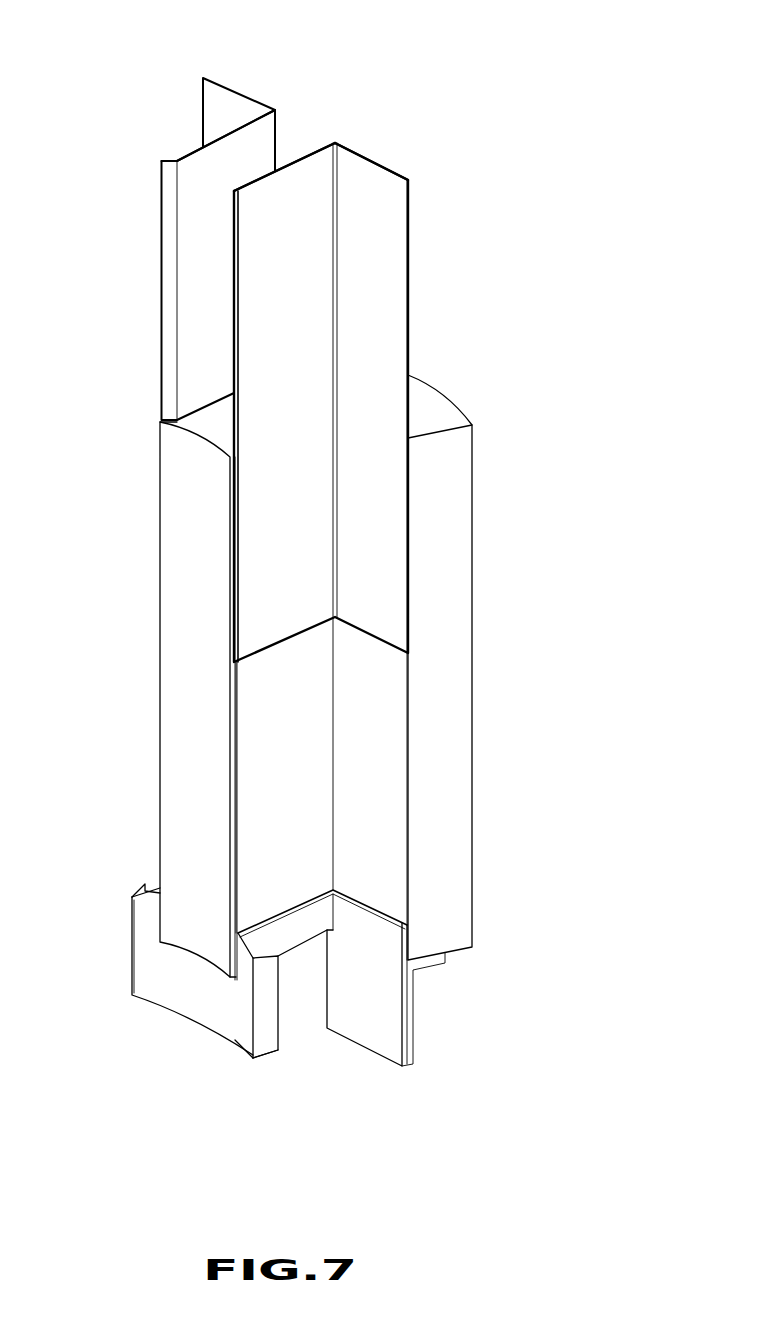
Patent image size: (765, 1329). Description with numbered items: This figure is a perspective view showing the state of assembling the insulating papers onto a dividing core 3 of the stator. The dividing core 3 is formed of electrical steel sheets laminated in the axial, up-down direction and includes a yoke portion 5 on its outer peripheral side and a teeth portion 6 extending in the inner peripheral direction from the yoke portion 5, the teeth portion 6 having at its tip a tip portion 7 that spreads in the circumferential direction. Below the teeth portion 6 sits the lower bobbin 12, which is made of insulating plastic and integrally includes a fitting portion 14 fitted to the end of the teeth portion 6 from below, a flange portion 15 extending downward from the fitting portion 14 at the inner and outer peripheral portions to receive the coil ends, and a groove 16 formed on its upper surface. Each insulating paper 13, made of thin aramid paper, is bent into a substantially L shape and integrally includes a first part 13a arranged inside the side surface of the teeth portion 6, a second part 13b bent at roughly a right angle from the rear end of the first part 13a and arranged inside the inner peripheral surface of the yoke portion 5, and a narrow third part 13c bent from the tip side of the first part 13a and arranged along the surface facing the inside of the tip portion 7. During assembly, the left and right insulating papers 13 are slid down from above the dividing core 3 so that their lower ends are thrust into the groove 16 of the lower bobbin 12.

The dividing core 3 is at (483, 467).
The yoke portion 5 is at (450, 643).
The teeth portion 6 is at (257, 690).
The tip portion 7 is at (158, 462).
The lower bobbin 12 is at (287, 1060).
The insulating paper 13 is at (250, 87).
The first part 13a is at (200, 170).
The second part 13b is at (217, 97).
The third part 13c is at (162, 235).
The fitting portion 14 is at (298, 930).
The flange portion 15 is at (182, 1013).
The groove 16 is at (292, 905).